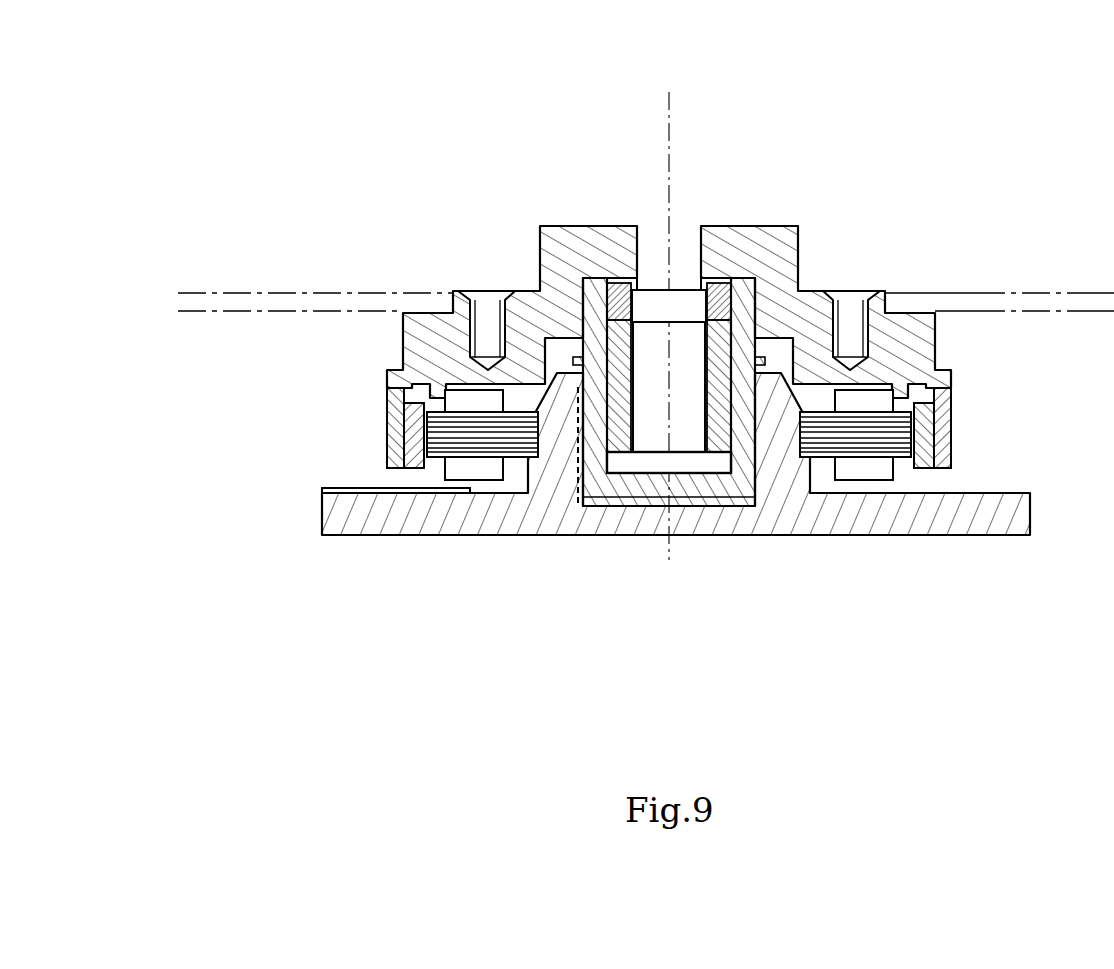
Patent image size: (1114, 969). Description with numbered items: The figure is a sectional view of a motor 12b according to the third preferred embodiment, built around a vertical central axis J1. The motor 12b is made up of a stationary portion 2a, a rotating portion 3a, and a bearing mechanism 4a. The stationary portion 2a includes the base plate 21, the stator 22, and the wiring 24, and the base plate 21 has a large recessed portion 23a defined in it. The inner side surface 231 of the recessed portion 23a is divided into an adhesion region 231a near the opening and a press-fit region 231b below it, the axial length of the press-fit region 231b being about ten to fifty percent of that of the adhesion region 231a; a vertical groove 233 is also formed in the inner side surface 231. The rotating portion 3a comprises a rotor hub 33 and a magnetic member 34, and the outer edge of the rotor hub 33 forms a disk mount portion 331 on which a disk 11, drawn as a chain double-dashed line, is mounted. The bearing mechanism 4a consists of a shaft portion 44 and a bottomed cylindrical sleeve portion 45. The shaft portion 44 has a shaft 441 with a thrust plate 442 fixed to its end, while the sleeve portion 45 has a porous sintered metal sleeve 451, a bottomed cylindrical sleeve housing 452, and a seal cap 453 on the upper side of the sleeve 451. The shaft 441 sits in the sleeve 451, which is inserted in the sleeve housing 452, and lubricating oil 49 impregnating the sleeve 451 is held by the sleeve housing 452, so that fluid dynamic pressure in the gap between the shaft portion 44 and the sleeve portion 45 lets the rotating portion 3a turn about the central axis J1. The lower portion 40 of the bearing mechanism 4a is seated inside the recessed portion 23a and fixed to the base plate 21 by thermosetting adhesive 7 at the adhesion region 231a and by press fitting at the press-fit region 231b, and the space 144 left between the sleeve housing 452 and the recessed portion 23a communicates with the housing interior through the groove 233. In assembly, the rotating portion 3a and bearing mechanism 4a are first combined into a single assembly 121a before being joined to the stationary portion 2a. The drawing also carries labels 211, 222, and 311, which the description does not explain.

The central axis J1 is at (670, 125).
The disk 11 is at (1035, 292).
The motor 12b is at (675, 389).
The bearing mechanism 4a is at (727, 237).
The sleeve portion 45 is at (727, 237).
The assembly 121a is at (727, 237).
The rotating portion 3a is at (671, 263).
The sleeve housing 452 is at (580, 393).
The sleeve 451 is at (628, 372).
The lower portion 40 is at (463, 291).
The rotor hub 33 is at (818, 330).
The disk mount portion 331 is at (892, 292).
The stationary portion 2a is at (676, 547).
The base plate 21 is at (828, 505).
The bottom portion 211 is at (968, 492).
The recessed portion 23a is at (778, 400).
The wiring 24 is at (400, 490).
The inner side surface 231 is at (623, 477).
The adhesion region 231a is at (696, 500).
The press-fit region 231b is at (757, 488).
The groove 233 is at (575, 480).
The lubricating oil 49 is at (718, 283).
The seal cap 453 is at (620, 283).
The shaft portion 44 is at (629, 514).
The shaft 441 is at (592, 480).
The thrust plate 442 is at (630, 440).
The space 144 is at (657, 460).
The shaft 311 is at (683, 297).
The stator 22 is at (885, 490).
The stator core 222 is at (862, 470).
The thermosetting adhesive 7 is at (578, 420).
The magnetic member 34 is at (710, 409).